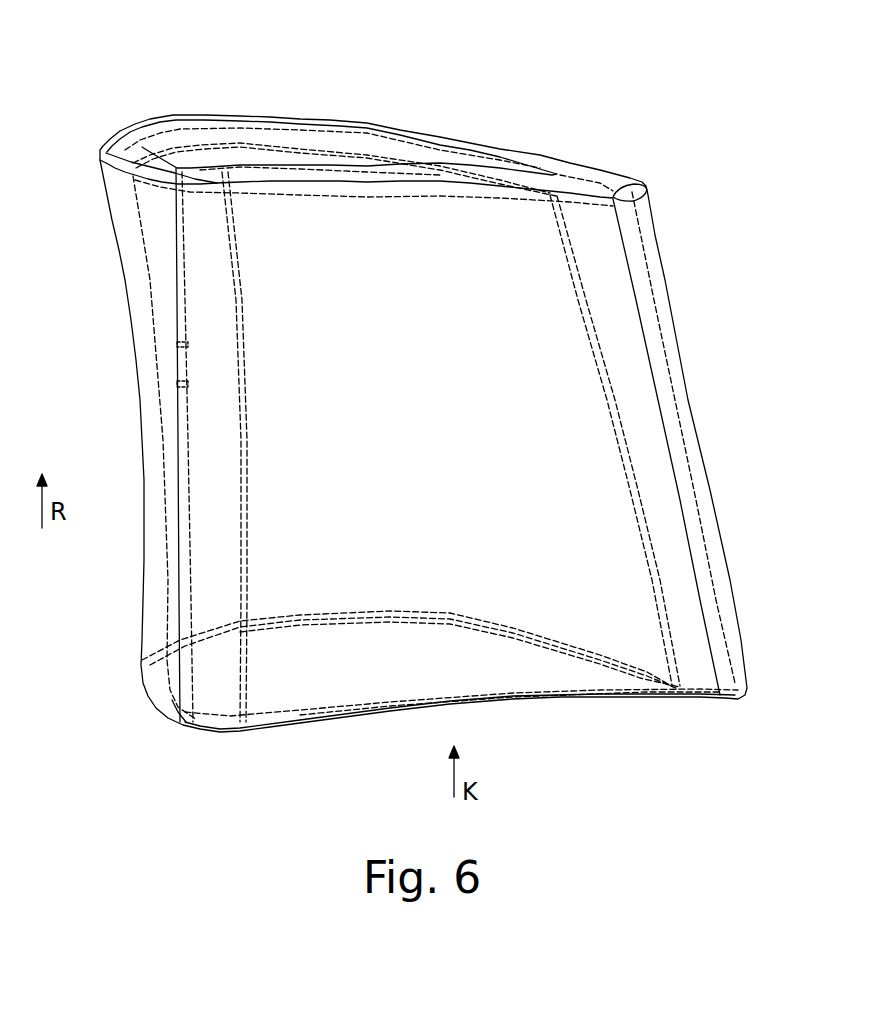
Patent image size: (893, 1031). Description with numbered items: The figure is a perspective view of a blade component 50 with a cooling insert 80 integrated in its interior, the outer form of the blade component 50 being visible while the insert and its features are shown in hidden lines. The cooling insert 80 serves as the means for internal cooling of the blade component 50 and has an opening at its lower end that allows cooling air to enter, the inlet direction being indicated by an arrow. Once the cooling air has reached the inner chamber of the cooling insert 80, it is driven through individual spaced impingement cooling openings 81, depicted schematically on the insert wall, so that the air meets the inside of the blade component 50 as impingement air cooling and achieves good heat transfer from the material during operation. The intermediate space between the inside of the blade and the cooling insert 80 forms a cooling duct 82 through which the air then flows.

The blade component 50 is at (358, 126).
The cooling insert 80 is at (603, 363).
The impingement cooling openings 81 is at (177, 344).
The cooling duct 82 is at (185, 720).